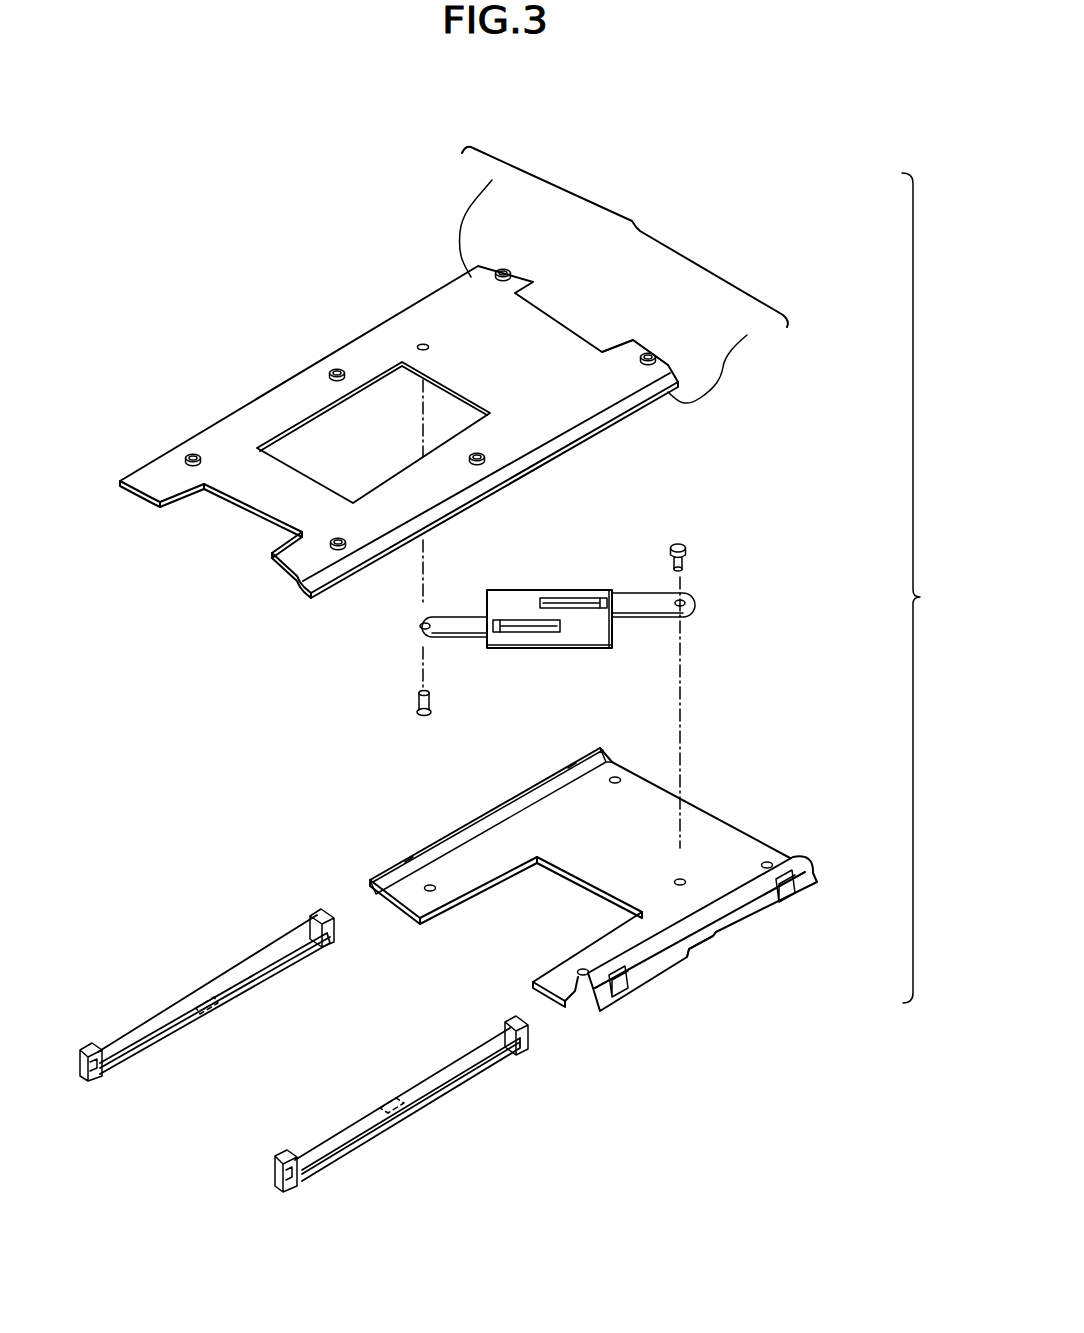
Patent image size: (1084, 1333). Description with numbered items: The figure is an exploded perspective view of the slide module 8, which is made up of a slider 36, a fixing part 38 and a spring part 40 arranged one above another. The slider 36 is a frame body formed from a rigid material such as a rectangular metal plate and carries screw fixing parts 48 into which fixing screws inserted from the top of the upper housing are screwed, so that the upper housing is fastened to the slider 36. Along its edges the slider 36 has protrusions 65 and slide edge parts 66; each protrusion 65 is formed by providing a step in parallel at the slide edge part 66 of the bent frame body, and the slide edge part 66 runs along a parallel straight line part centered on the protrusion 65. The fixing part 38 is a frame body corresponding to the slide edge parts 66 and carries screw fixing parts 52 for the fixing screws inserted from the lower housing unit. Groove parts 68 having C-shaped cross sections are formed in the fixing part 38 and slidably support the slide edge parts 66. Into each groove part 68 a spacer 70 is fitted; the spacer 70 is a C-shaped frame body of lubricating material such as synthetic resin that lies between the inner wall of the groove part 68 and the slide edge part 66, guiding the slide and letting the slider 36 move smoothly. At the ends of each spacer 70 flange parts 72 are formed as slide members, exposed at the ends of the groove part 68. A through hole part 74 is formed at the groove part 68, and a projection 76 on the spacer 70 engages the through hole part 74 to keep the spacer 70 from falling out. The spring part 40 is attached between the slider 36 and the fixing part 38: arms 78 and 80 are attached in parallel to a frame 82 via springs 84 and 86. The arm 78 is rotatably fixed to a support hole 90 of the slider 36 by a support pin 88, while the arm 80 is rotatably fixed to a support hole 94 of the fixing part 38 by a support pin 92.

The slide module 8 is at (922, 588).
The slider 36 is at (640, 226).
The fixing part 38 is at (636, 972).
The spring part 40 is at (622, 676).
The screw fixing parts 48 is at (506, 270).
The screw fixing parts 52 is at (618, 778).
The protrusion 65 is at (638, 346).
The slide edge parts 66 is at (620, 279).
The groove parts 68 is at (605, 752).
The spacer 70 is at (326, 1051).
The flange parts 72 is at (321, 912).
The through hole part 74 is at (705, 948).
The projection 76 is at (217, 1010).
The arm 78 is at (418, 636).
The arm 80 is at (662, 618).
The frame 82 is at (590, 648).
The spring 84 is at (588, 598).
The spring 86 is at (512, 632).
The support pin 88 is at (418, 712).
The support hole 90 is at (422, 345).
The support pin 92 is at (688, 550).
The support hole 94 is at (683, 880).